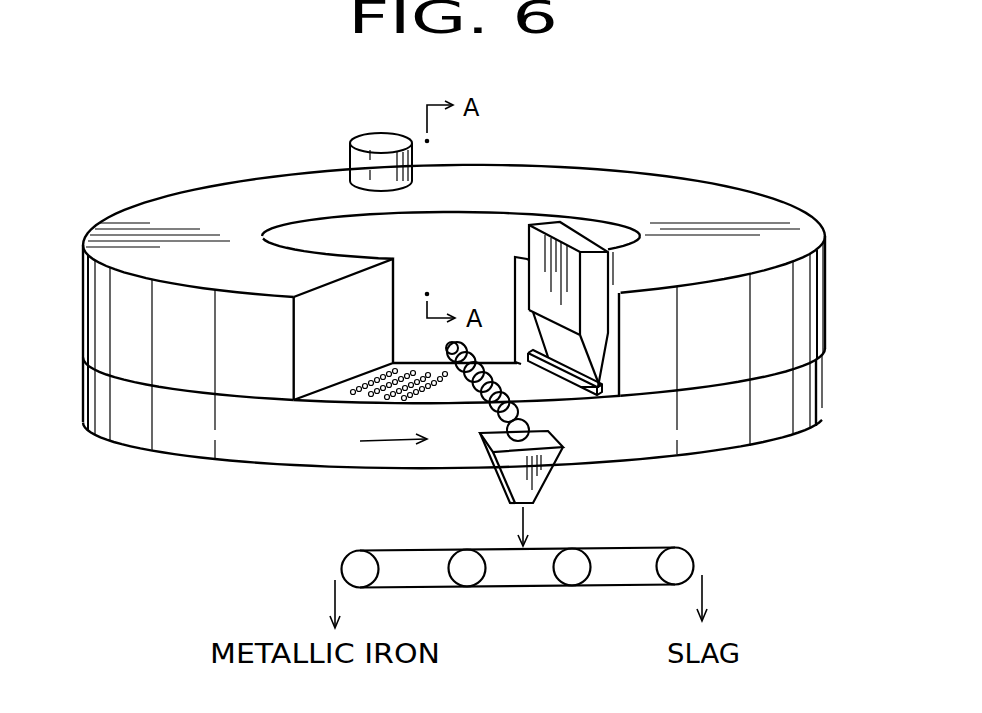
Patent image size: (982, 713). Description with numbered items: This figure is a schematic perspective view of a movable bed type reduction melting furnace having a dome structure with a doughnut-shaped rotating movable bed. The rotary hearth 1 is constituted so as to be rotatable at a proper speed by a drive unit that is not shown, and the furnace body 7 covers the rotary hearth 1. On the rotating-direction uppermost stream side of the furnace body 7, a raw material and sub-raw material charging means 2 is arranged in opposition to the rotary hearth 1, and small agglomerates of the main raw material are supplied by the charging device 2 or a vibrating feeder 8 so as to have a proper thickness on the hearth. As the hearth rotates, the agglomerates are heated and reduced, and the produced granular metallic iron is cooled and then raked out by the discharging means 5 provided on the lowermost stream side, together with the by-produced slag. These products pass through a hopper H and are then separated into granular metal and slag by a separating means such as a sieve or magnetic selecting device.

The rotary hearth 1 is at (235, 437).
The raw material and sub-raw material charging means 2 is at (572, 237).
The discharging means 5 is at (451, 349).
The furnace body 7 is at (727, 196).
The vibrating feeder 8 is at (548, 357).
The hopper H is at (543, 475).